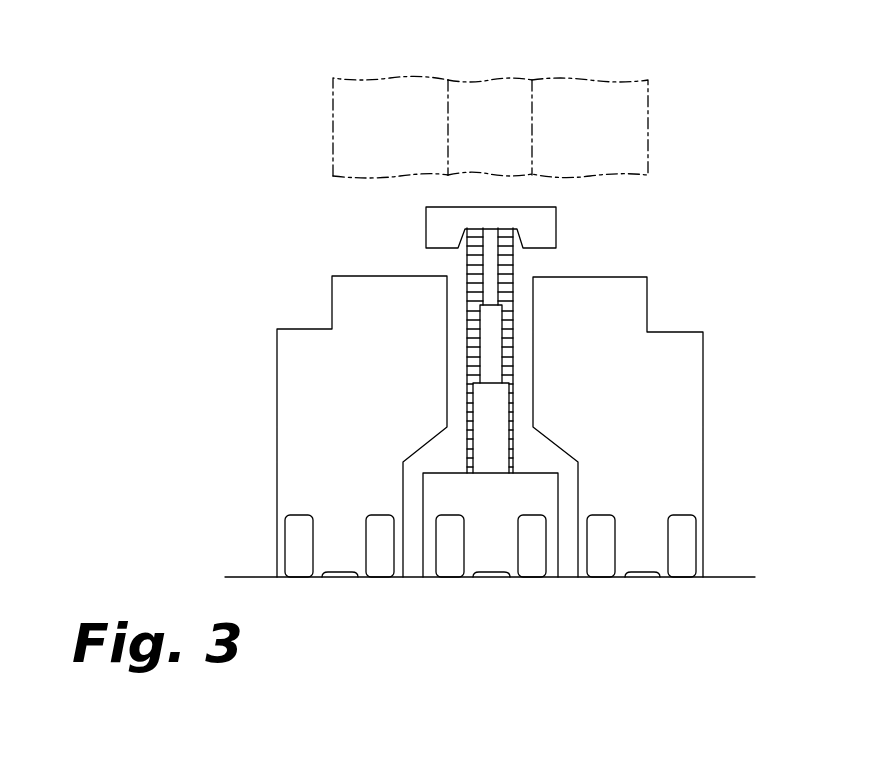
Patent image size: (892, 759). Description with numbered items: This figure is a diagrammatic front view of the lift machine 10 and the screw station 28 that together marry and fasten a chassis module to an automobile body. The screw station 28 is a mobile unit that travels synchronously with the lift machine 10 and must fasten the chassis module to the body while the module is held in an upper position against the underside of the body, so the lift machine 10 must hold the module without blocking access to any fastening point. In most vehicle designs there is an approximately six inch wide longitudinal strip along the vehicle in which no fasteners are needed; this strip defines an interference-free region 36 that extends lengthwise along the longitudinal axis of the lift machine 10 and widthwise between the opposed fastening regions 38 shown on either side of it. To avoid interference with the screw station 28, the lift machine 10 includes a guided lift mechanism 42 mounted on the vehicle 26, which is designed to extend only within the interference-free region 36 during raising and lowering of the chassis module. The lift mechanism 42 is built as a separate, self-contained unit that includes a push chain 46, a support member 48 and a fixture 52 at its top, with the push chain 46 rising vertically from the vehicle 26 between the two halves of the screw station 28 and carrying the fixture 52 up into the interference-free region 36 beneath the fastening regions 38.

The lift machine 10 is at (464, 580).
The vehicle 26 is at (533, 482).
The screw station 28 is at (277, 424).
The interference-free region 36 is at (464, 100).
The fastening region 38 is at (405, 98).
The guided lift mechanism 42 is at (543, 267).
The push chain 46 is at (467, 267).
The support member 48 is at (485, 405).
The fixture 52 is at (545, 217).